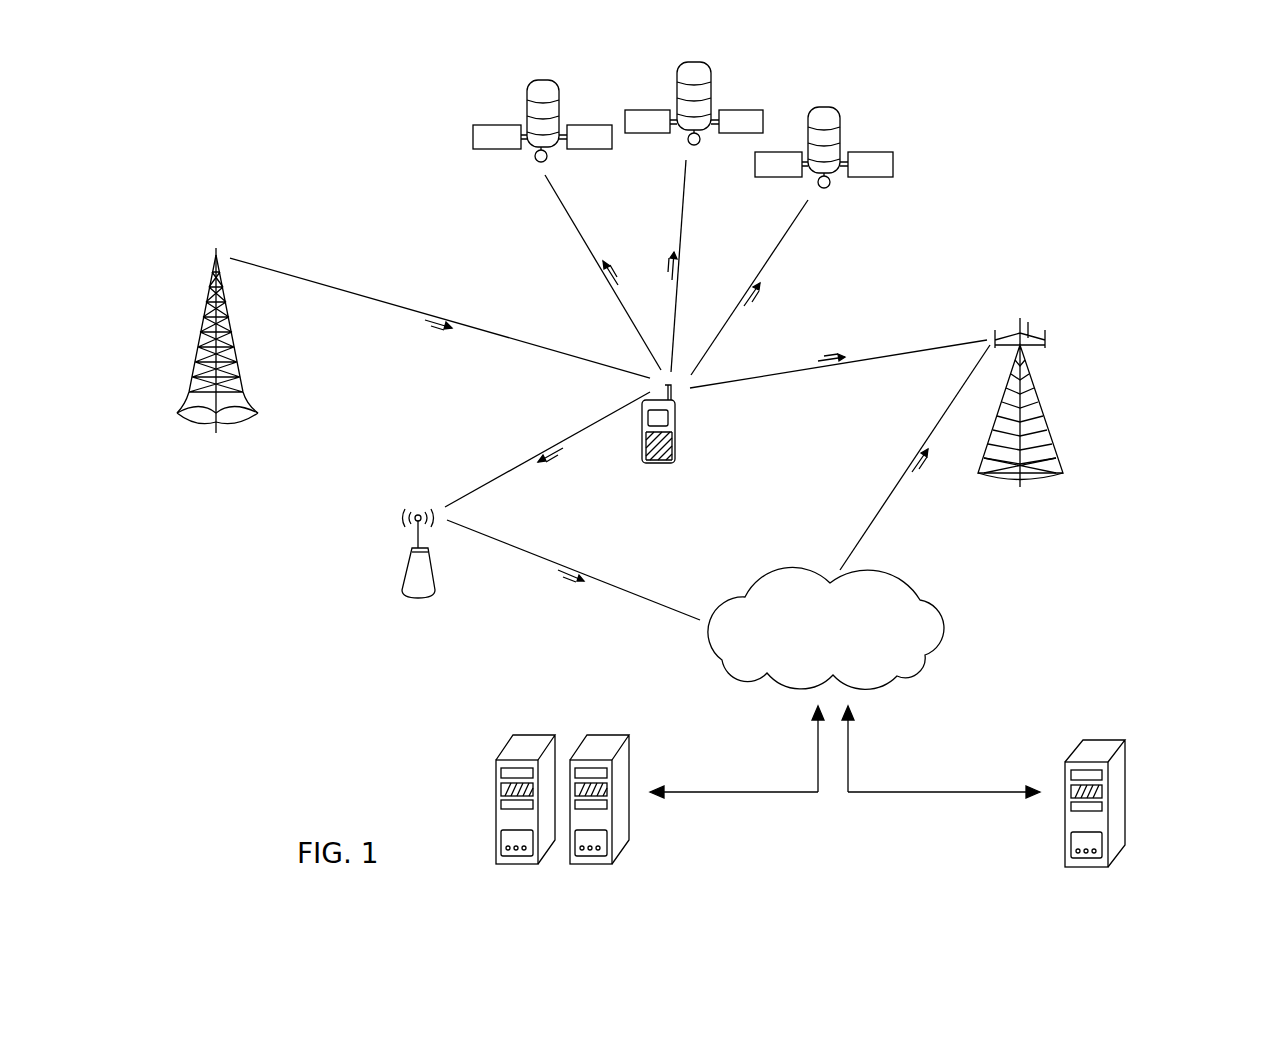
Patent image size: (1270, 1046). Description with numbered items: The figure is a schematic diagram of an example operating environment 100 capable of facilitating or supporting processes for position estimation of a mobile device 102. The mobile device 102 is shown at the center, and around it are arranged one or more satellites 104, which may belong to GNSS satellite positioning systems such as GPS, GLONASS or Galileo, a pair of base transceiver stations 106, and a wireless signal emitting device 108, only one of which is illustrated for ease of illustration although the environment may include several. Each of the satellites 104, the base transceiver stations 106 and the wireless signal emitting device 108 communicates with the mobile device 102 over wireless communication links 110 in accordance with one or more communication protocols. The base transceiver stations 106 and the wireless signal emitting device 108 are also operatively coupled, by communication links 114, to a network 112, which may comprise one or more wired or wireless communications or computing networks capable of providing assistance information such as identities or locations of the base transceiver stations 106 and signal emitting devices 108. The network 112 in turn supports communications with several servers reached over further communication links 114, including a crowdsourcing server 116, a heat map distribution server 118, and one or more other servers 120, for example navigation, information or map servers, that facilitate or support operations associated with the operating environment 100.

The operating environment 100 is at (1112, 118).
The mobile device 102 is at (678, 445).
The satellites 104 is at (542, 80).
The base transceiver stations 106 is at (208, 297).
The wireless signal emitting device 108 is at (410, 556).
The wireless communication links 110 is at (573, 230).
The network 112 is at (958, 620).
The communication links 114 is at (560, 572).
The crowdsourcing server 116 is at (530, 735).
The heat map distribution server 118 is at (600, 735).
The other servers 120 is at (1152, 805).